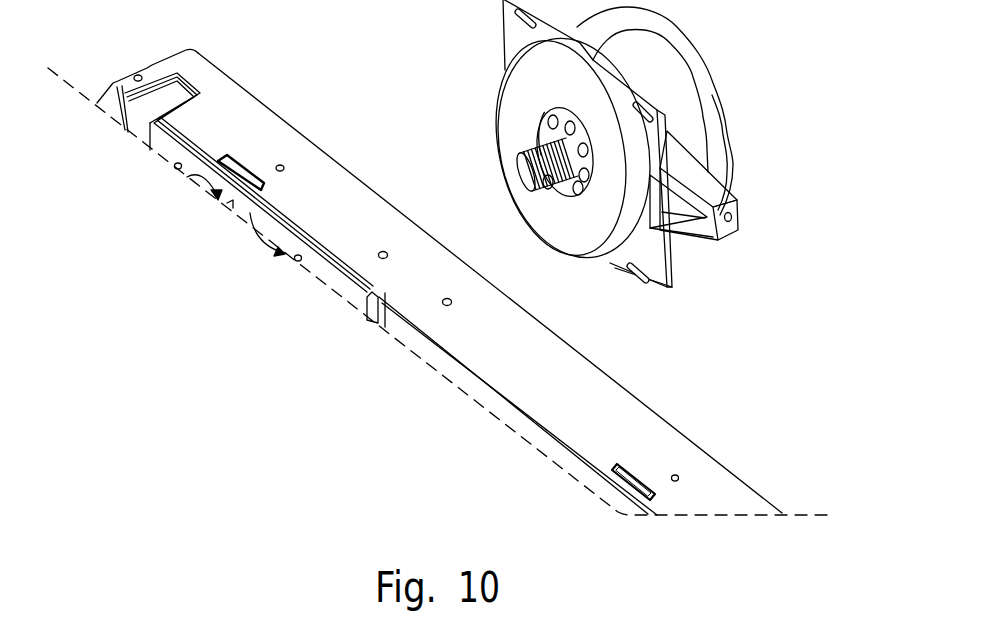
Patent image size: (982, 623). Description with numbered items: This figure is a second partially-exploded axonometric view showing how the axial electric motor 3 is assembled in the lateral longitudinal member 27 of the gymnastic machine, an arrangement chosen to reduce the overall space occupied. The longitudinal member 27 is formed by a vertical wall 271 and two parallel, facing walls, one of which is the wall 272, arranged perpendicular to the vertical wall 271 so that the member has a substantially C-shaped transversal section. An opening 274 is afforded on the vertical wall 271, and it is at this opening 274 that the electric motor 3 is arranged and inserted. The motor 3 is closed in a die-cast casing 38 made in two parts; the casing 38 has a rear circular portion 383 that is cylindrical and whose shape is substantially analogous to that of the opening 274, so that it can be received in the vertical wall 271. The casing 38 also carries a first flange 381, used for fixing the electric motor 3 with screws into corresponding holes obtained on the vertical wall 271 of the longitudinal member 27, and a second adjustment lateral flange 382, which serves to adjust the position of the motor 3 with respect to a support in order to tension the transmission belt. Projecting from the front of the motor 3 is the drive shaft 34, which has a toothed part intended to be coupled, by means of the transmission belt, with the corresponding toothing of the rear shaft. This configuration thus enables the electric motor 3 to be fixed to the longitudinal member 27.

The longitudinal member 27 is at (226, 58).
The vertical wall 271 is at (497, 395).
The wall 272 is at (250, 122).
The opening 274 is at (247, 170).
The axial electric motor 3 is at (740, 118).
The drive shaft 34 is at (530, 178).
The die-cast casing 38 is at (697, 53).
The first flange 381 is at (665, 132).
The second adjustment lateral flange 382 is at (731, 228).
The rear circular portion 383 is at (506, 66).